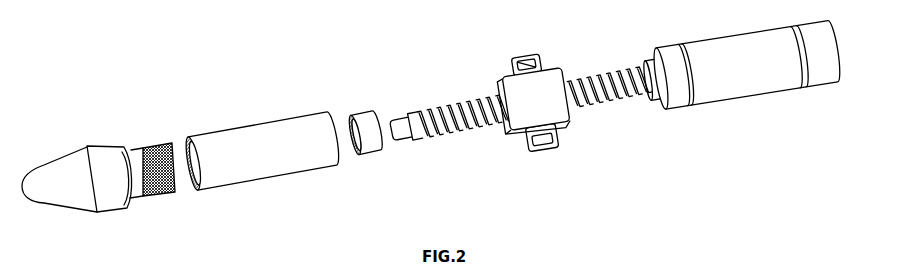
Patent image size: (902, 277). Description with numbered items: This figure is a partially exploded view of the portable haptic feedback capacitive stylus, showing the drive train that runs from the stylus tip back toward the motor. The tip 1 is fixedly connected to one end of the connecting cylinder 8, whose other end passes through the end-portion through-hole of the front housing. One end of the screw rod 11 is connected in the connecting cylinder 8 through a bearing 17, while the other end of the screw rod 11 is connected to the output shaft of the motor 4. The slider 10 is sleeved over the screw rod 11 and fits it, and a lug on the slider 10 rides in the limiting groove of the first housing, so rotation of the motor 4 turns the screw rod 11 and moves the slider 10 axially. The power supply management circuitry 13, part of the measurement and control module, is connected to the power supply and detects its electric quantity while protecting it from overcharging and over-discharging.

The tip 1 is at (53, 182).
The connecting cylinder 8 is at (255, 150).
The bearing 17 is at (365, 112).
The screw rod 11 is at (440, 123).
The slider 10 is at (528, 102).
The motor 4 is at (737, 75).
The power supply management circuitry 13 is at (815, 63).